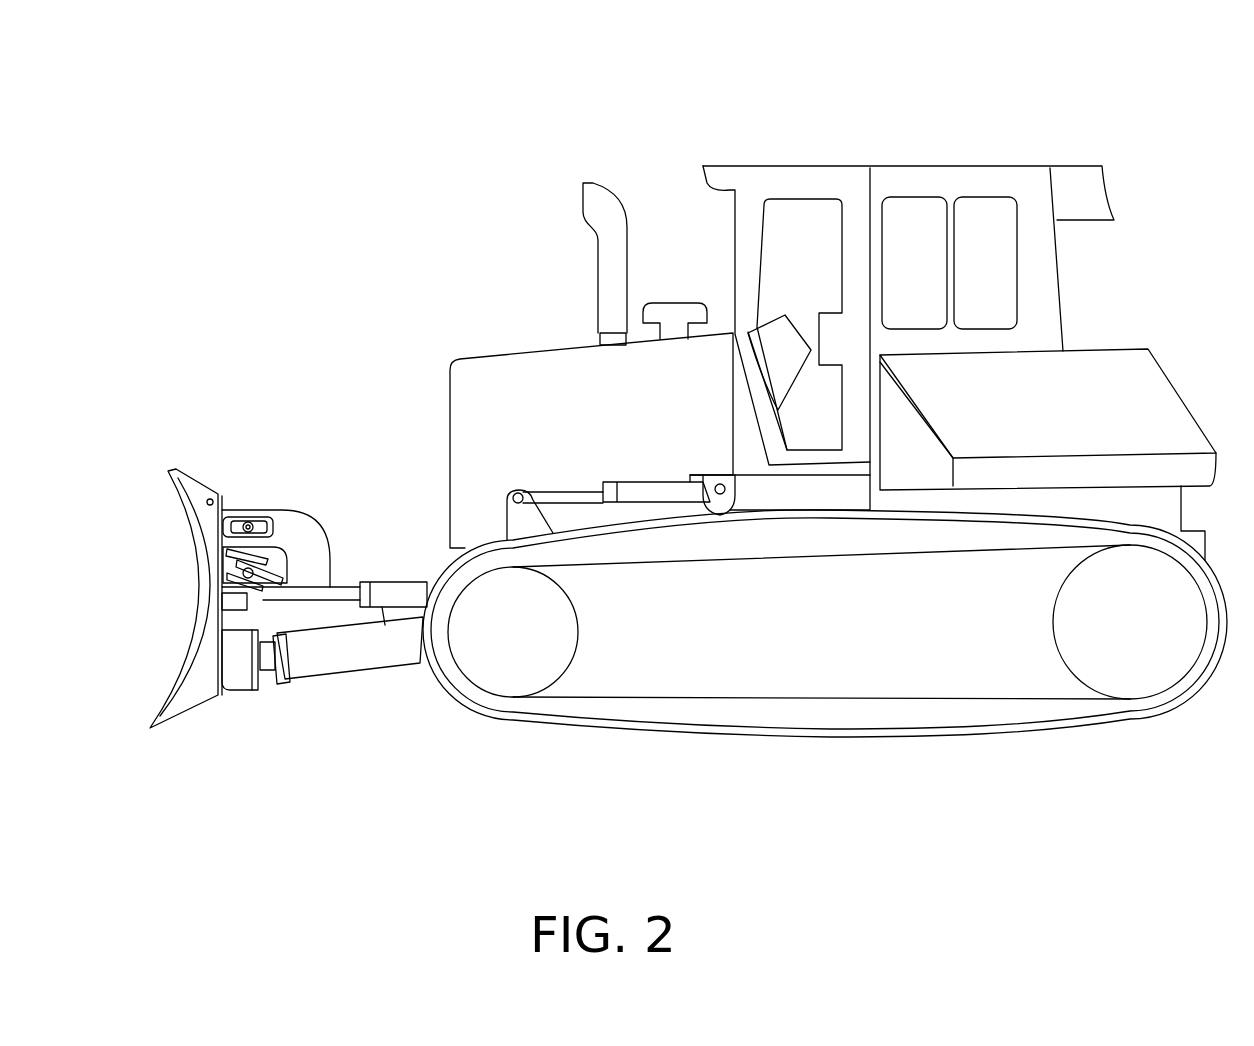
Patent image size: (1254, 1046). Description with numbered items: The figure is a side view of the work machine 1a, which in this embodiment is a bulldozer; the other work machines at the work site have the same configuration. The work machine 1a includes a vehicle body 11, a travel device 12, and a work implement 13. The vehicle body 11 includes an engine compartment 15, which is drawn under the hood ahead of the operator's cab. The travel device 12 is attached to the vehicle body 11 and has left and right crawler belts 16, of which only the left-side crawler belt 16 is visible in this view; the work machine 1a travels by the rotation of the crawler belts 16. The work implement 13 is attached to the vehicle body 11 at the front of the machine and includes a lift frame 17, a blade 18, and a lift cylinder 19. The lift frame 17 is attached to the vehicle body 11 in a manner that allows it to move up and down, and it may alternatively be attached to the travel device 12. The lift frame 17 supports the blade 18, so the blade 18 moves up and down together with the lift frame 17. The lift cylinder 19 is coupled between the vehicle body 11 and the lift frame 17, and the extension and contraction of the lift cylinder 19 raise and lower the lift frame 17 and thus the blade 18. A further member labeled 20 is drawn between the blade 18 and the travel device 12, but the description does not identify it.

The work machine 1a is at (667, 439).
The vehicle body 11 is at (538, 250).
The travel device 12 is at (825, 664).
The work implement 13 is at (267, 538).
The engine compartment 15 is at (673, 370).
The crawler belt 16 is at (967, 733).
The lift frame 17 is at (372, 663).
The blade 18 is at (200, 545).
The lift cylinder 19 is at (647, 490).
The push arm 20 is at (398, 585).